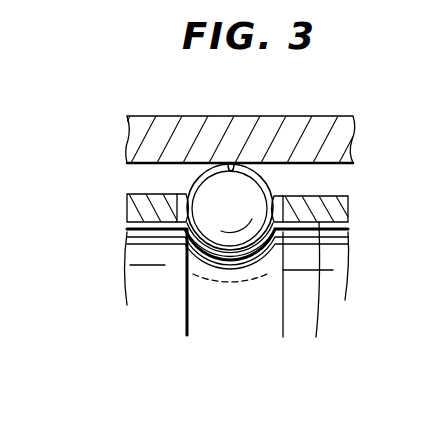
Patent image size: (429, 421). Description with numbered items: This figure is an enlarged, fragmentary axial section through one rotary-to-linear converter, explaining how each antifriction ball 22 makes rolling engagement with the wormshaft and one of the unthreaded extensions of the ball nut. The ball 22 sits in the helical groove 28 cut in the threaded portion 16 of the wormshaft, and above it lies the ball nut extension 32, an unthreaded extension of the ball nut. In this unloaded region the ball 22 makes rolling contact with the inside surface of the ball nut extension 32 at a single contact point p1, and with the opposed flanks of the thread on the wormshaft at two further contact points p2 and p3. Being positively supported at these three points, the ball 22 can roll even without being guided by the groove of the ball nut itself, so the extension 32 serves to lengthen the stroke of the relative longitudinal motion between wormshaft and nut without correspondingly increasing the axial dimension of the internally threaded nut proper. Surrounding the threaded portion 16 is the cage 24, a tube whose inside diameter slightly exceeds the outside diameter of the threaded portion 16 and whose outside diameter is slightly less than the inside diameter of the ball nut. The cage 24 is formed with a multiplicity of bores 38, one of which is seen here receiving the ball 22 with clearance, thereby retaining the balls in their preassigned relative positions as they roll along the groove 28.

The ball nut extension 32 is at (276, 137).
The antifriction ball 22 is at (245, 219).
The contact point p1 is at (232, 163).
The contact point p2 is at (127, 211).
The contact point p3 is at (272, 211).
The bore 38 is at (192, 185).
The threaded portion 16 is at (118, 251).
The helical groove 28 is at (207, 308).
The cage 24 is at (316, 292).